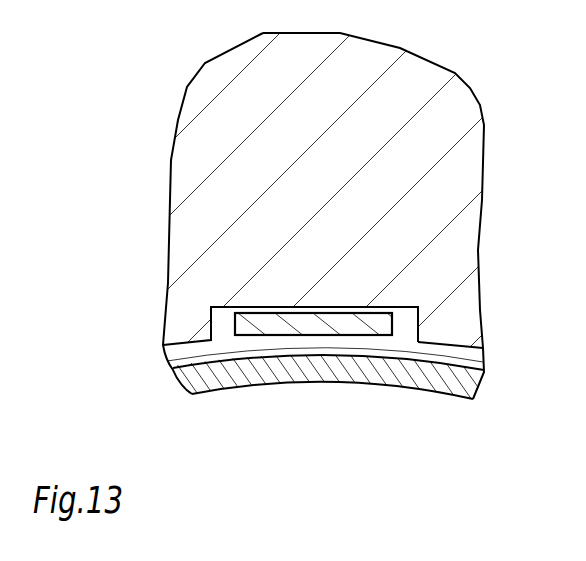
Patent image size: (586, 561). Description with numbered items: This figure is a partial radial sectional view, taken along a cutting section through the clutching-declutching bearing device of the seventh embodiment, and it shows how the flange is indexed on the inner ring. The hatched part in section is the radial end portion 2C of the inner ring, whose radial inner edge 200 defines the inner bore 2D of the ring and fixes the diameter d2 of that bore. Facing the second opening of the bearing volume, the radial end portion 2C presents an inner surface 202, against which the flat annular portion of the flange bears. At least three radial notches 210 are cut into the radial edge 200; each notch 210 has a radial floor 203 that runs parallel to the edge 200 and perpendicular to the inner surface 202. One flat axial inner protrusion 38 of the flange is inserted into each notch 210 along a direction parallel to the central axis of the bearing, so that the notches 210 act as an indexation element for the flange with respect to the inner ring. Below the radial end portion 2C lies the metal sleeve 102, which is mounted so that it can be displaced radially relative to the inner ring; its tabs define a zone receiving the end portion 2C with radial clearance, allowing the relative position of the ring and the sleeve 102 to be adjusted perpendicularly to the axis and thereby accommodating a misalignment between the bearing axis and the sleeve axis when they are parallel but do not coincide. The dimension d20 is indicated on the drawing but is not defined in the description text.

The inner surface 202 is at (217, 167).
The radial end portion 2C is at (388, 152).
The axial inner protrusion 38 is at (347, 323).
The radial notch 210 is at (222, 322).
The radial floor 203 is at (405, 312).
The radial inner edge 200 is at (450, 343).
The metal sleeve 102 is at (350, 370).
The diameter of the inner bore d2 is at (224, 508).
The diameter d20 is at (293, 532).
The inner bore 2D is at (319, 431).